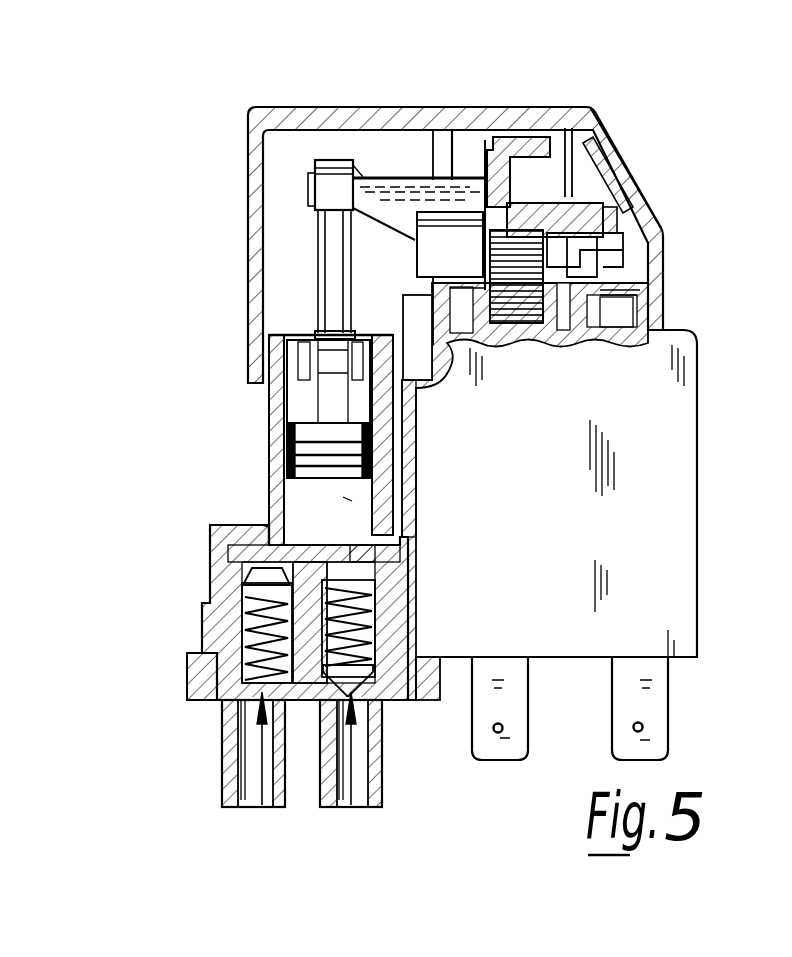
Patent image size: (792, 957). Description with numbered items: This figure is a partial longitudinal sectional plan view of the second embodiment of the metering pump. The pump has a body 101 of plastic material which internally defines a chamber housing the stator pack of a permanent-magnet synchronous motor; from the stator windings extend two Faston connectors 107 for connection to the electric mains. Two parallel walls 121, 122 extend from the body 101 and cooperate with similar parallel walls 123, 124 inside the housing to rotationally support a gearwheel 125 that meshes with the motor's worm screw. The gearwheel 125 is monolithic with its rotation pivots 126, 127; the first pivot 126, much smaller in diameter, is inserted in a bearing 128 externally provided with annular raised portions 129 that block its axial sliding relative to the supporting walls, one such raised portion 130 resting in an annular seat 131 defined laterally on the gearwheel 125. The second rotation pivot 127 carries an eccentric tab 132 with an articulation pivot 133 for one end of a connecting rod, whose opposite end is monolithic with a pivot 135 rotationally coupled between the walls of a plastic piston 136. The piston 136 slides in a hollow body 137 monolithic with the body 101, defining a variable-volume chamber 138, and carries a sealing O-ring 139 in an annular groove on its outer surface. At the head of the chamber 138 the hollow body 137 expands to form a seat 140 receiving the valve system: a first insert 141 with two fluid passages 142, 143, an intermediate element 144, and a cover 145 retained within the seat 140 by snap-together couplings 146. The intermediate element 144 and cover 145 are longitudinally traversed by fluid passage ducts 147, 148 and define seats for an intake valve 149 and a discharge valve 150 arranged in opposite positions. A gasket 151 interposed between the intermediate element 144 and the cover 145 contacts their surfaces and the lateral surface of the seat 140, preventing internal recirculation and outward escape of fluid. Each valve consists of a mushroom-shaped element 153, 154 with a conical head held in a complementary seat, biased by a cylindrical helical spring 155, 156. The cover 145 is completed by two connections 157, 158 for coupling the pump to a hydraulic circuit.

The body 101 is at (662, 458).
The Faston connectors 107 is at (625, 705).
The parallel wall 121 is at (600, 320).
The parallel wall 122 is at (425, 289).
The parallel wall 123 is at (593, 125).
The parallel wall 124 is at (422, 205).
The gearwheel 125 is at (600, 287).
The rotation pivot 126 is at (600, 252).
The rotation pivot 127 is at (333, 110).
The bearing 128 is at (633, 197).
The annular raised portions 129 is at (580, 135).
The annular raised portion 130 is at (527, 160).
The annular seat 131 is at (517, 150).
The eccentric tab 132 is at (365, 178).
The articulation pivot 133 is at (313, 190).
The pivot 135 is at (293, 353).
The piston 136 is at (310, 432).
The hollow body 137 is at (310, 452).
The variable-volume chamber 138 is at (345, 498).
The sealing O-ring 139 is at (348, 452).
The seat 140 is at (205, 602).
The first insert 141 is at (210, 543).
The fluid passage 142 is at (257, 523).
The fluid passage 143 is at (418, 533).
The intermediate element 144 is at (380, 620).
The cover 145 is at (305, 690).
The snap-together couplings 146 is at (200, 703).
The fluid passage duct 147 is at (353, 570).
The fluid passage duct 148 is at (223, 548).
The intake valve 149 is at (347, 793).
The discharge valve 150 is at (253, 790).
The gasket 151 is at (200, 642).
The mushroom-shaped element 153 is at (377, 710).
The mushroom-shaped element 154 is at (235, 585).
The cylindrical helical spring 155 is at (385, 583).
The cylindrical helical spring 156 is at (220, 707).
The connection 157 is at (340, 790).
The connection 158 is at (230, 788).